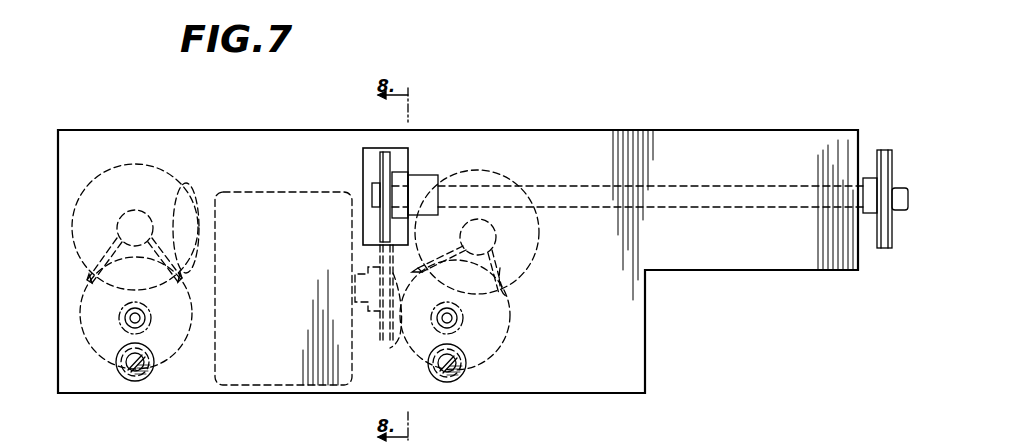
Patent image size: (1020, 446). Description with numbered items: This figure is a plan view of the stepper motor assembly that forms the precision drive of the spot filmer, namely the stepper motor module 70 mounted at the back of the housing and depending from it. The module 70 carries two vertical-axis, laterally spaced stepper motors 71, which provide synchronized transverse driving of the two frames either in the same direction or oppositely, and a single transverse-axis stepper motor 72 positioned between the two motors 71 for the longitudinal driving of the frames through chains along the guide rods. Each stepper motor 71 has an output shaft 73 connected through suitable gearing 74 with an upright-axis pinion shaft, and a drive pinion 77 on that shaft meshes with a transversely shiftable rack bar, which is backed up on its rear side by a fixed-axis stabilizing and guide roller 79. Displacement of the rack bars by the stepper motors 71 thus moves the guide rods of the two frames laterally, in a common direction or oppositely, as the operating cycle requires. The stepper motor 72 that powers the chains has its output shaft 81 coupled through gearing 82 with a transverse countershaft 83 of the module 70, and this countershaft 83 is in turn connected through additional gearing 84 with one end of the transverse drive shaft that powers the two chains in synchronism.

The stepper motor module 70 is at (556, 126).
The stepper motor 71 is at (137, 162).
The stepper motor 72 is at (283, 388).
The output shaft 73 is at (135, 222).
The gearing 74 is at (176, 188).
The drive pinion 77 is at (122, 320).
The stabilizing and guide roller 79 is at (135, 381).
The output shaft 81 is at (392, 343).
The gearing 82 is at (380, 240).
The countershaft 83 is at (757, 202).
The gearing 84 is at (885, 249).